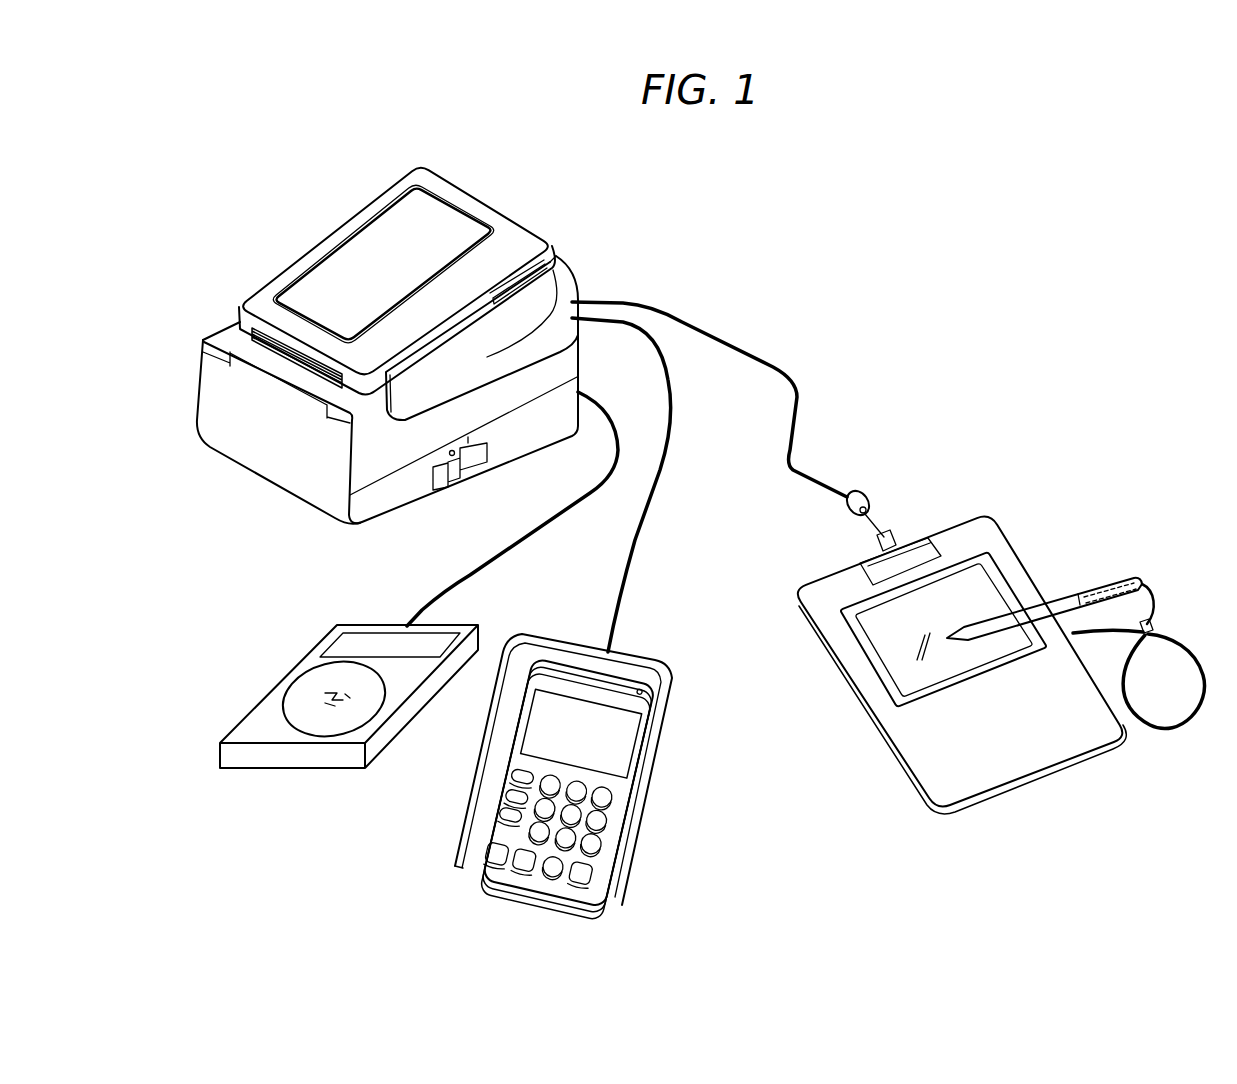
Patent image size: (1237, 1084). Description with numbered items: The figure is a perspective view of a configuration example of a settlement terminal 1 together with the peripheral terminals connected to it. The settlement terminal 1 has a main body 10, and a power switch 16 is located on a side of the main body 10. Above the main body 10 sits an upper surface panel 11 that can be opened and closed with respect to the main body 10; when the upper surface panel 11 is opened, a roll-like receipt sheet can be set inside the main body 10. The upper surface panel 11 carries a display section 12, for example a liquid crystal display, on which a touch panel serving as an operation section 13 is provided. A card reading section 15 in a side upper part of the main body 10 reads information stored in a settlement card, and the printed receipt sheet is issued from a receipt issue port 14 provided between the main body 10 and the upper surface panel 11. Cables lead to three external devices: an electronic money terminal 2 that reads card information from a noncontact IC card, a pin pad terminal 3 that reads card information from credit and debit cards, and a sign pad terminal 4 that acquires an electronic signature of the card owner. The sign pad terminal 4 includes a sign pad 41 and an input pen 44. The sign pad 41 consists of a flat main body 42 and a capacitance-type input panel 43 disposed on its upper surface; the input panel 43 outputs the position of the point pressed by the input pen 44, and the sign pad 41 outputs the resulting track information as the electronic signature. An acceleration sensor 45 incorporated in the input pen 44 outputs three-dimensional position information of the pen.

The settlement terminal 1 is at (282, 236).
The main body 10 is at (572, 278).
The upper surface panel 11 is at (515, 212).
The display section 12 is at (458, 218).
The operation section 13 is at (358, 245).
The receipt issue port 14 is at (290, 357).
The card reading section 15 is at (487, 357).
The power switch 16 is at (459, 473).
The electronic money terminal 2 is at (254, 674).
The pin pad terminal 3 is at (660, 630).
The sign pad terminal 4 is at (986, 478).
The sign pad 41 is at (909, 752).
The main body 42 is at (1023, 772).
The input panel 43 is at (878, 625).
The input pen 44 is at (1070, 590).
The acceleration sensor 45 is at (1113, 580).